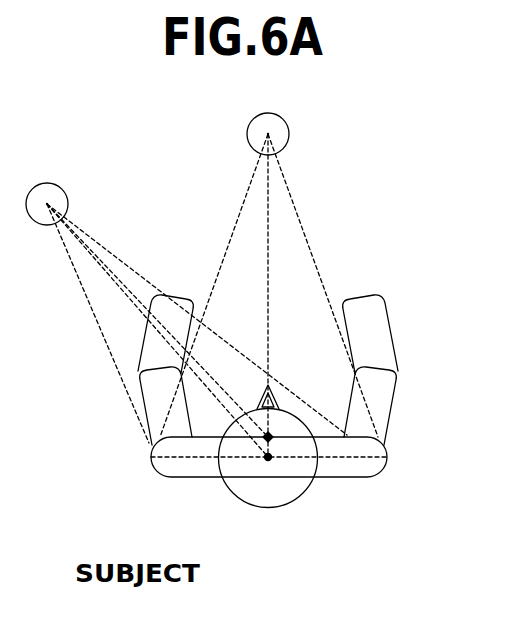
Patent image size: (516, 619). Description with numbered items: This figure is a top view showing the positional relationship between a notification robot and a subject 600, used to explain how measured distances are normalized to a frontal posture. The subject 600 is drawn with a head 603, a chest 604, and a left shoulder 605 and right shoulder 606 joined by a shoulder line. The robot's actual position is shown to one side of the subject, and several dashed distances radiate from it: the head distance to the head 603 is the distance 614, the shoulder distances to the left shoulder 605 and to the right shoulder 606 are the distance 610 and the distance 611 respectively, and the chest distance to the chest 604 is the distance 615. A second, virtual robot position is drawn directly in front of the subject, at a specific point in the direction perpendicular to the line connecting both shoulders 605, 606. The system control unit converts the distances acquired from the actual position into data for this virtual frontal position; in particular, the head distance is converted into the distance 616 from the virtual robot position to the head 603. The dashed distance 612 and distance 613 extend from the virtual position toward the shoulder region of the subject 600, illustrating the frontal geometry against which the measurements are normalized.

The subject 600 is at (175, 478).
The head 603 is at (268, 507).
The chest 604 is at (270, 440).
The left shoulder 605 is at (150, 459).
The right shoulder 606 is at (390, 458).
The distance 610 is at (100, 331).
The distance 611 is at (145, 280).
The distance 612 is at (243, 201).
The distance 613 is at (308, 247).
The distance 614 is at (222, 400).
The distance 615 is at (113, 272).
The distance 616 is at (272, 460).